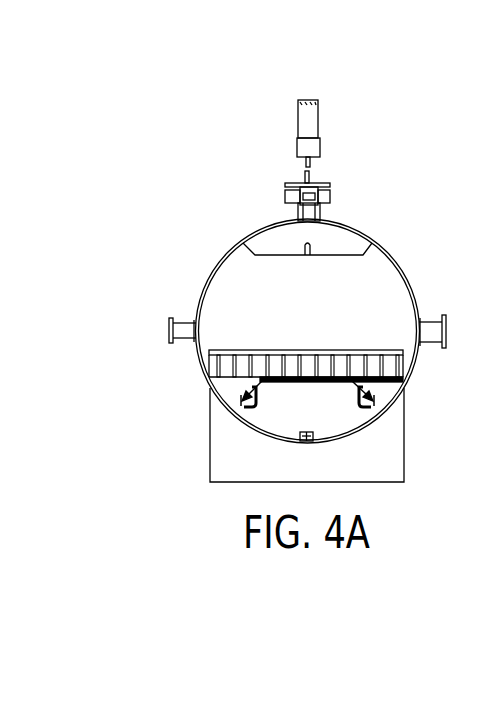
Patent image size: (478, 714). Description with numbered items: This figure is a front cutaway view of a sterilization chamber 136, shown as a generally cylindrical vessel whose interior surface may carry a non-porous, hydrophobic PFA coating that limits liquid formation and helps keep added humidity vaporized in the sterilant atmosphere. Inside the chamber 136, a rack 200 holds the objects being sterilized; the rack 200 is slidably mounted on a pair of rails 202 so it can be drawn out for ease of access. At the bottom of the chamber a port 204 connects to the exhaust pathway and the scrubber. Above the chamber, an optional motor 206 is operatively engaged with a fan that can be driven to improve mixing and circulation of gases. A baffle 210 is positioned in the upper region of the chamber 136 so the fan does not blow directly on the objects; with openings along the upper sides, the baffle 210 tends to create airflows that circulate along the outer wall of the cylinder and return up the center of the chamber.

The sterilization chamber 136 is at (397, 263).
The rack 200 is at (405, 362).
The rails 202 is at (235, 398).
The port 204 is at (323, 442).
The motor 206 is at (320, 146).
The baffle 210 is at (357, 248).